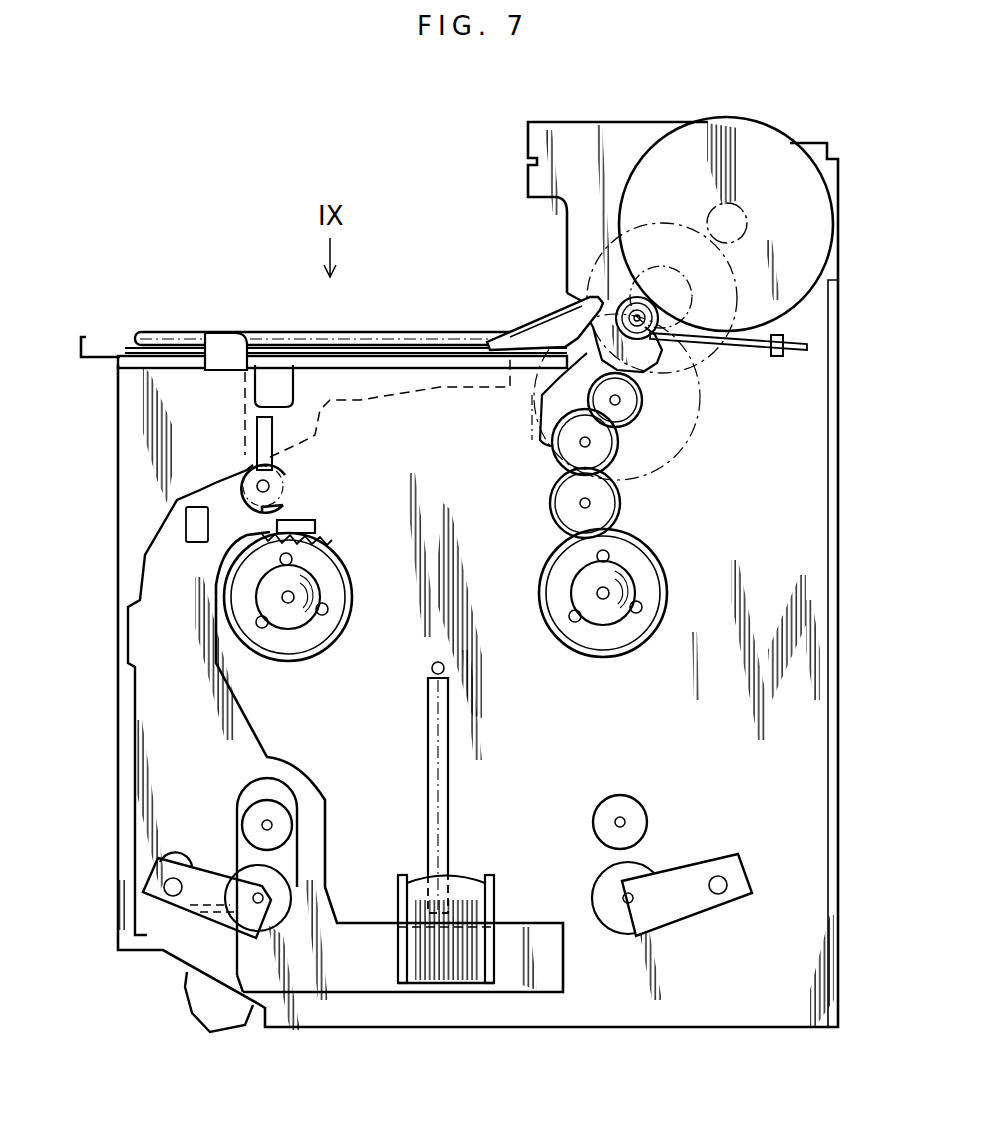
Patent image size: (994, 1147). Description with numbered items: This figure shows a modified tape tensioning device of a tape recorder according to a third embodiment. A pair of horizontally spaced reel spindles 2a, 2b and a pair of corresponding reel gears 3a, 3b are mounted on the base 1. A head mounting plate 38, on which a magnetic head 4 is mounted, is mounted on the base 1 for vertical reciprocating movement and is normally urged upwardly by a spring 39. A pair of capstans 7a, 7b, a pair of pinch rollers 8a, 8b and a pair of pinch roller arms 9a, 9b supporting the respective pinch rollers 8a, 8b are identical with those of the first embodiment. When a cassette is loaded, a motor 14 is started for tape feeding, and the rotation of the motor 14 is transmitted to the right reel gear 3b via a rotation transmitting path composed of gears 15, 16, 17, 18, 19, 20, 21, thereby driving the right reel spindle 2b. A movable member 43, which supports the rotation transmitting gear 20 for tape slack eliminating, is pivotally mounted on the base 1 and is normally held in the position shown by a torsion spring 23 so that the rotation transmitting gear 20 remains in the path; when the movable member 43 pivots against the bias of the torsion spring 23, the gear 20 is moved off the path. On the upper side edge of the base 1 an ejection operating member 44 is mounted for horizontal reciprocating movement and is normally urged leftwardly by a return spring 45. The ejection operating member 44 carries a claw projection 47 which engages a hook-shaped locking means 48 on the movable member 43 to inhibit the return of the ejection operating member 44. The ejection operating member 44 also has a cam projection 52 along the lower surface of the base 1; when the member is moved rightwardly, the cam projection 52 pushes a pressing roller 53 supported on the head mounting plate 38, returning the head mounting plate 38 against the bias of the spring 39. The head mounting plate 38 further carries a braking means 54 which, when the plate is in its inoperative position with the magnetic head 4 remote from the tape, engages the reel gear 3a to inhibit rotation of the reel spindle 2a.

The base 1 is at (838, 605).
The reel spindle 2a is at (280, 620).
The reel spindle 2b is at (590, 620).
The reel gear 3a is at (330, 647).
The reel gear 3b is at (645, 647).
The magnetic head 4 is at (443, 975).
The capstan 7a is at (270, 823).
The capstan 7b is at (622, 820).
The pinch roller 8a is at (295, 870).
The pinch roller 8b is at (645, 872).
The pinch roller arm 9a is at (208, 862).
The pinch roller arm 9b is at (733, 857).
The motor 14 is at (826, 240).
The gear 15 is at (747, 223).
The gear 16 is at (633, 222).
The gear 17 is at (665, 263).
The gear 18 is at (700, 430).
The gear 19 is at (645, 401).
The rotation transmitting gear 20 is at (620, 455).
The gear 21 is at (622, 505).
The torsion spring 23 is at (808, 346).
The head mounting plate 38 is at (520, 988).
The spring 39 is at (450, 795).
The movable member 43 is at (548, 424).
The ejection operating member 44 is at (79, 360).
The return spring 45 is at (175, 330).
The claw projection 47 is at (556, 300).
The hook-shaped locking means 48 is at (540, 326).
The cam projection 52 is at (322, 447).
The pressing roller 53 is at (300, 484).
The braking means 54 is at (318, 524).